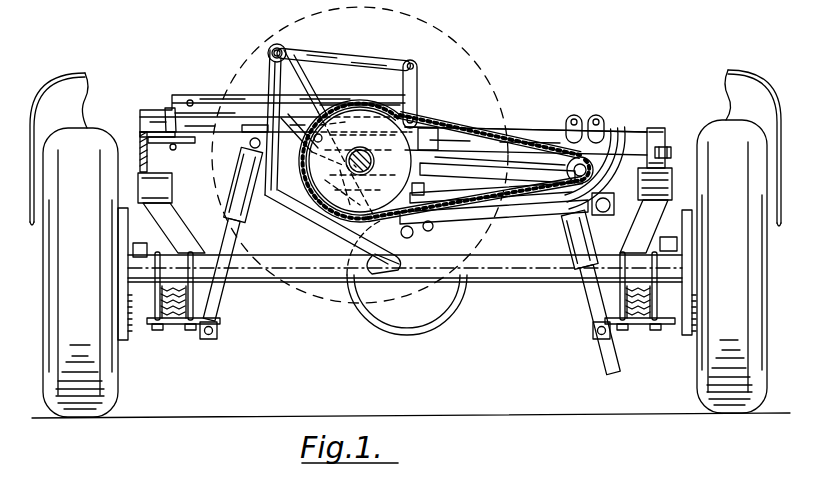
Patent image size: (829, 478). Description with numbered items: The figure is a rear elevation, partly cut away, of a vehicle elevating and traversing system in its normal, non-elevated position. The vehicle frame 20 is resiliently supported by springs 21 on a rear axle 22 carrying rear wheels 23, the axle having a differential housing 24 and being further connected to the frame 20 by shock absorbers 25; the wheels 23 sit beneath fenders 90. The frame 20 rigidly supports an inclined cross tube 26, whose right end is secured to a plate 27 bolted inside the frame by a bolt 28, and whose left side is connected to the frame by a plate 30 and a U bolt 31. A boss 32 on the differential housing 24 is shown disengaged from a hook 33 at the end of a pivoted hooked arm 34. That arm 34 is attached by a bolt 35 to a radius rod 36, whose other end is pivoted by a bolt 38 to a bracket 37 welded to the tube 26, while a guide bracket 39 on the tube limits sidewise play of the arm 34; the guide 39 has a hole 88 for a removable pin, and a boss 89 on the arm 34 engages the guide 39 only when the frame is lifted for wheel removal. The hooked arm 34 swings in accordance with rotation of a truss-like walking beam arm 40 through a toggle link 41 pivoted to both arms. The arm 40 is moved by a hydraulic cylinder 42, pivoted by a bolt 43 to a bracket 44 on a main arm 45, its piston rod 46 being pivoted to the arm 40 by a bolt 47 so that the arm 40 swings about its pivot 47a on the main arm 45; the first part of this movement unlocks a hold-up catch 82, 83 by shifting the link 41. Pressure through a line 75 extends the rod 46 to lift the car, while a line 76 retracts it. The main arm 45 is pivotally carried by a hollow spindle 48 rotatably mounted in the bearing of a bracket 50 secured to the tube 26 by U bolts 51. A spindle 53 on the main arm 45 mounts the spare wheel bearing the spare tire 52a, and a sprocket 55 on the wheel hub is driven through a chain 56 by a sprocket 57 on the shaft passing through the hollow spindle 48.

The vehicle frame 20 is at (140, 134).
The springs 21 is at (178, 324).
The rear axle 22 is at (506, 276).
The rear wheels 23 is at (119, 396).
The differential housing 24 is at (436, 318).
The shock absorbers 25 is at (236, 206).
The inclined cross shaft or tube 26 is at (516, 127).
The plate 27 is at (665, 143).
The bolt 28 is at (671, 153).
The plate 30 is at (186, 143).
The U bolt 31 is at (164, 108).
The boss 32 is at (401, 249).
The hook 33 is at (424, 246).
The hooked arm 34 is at (433, 193).
The bolt 35 is at (416, 102).
The radius rod 36 is at (330, 97).
The bracket 37 is at (183, 100).
The bolt or pivot means 38 is at (196, 96).
The guide bracket 39 is at (428, 150).
The walking beam arm 40 is at (332, 224).
The toggle link 41 is at (340, 56).
The hydraulic cylinder 42 is at (520, 222).
The bolt 43 is at (608, 209).
The bracket 44 is at (642, 191).
The main arm 45 is at (497, 166).
The piston rod 46 is at (411, 194).
The bolt 47 is at (389, 176).
The pivot 47a is at (357, 158).
The hollow crank or spindle 48 is at (526, 129).
The bracket 50 is at (578, 118).
The U bolts 51 is at (598, 116).
The spare tire 52a is at (455, 36).
The spindle 53 is at (374, 160).
The sprocket 55 is at (326, 203).
The chain 56 is at (500, 130).
The sprocket 57 is at (584, 153).
The line 75 is at (622, 132).
The line 76 is at (614, 126).
The hold-up catch 82 is at (312, 140).
The hold-up catch 83 is at (250, 124).
The hole 88 is at (430, 125).
The boss 89 is at (500, 154).
The fenders 90 is at (58, 74).